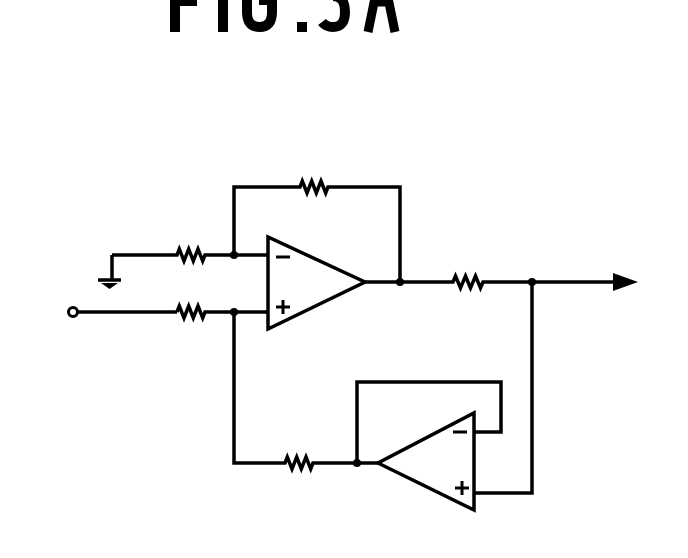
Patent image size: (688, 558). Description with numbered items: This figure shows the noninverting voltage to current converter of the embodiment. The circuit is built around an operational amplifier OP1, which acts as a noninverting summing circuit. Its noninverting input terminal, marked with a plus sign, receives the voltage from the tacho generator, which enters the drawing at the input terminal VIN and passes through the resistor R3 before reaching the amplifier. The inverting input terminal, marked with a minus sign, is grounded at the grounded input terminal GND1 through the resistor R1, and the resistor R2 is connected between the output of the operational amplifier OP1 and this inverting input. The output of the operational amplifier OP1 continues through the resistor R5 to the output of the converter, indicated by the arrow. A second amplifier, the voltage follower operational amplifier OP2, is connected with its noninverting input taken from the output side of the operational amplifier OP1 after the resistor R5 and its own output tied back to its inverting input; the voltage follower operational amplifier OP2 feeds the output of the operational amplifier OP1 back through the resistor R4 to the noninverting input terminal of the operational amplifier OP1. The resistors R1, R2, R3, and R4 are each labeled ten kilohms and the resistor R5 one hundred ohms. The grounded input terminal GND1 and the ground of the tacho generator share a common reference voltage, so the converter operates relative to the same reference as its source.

The resistor R1 is at (190, 222).
The resistor R2 is at (317, 213).
The resistor R3 is at (217, 311).
The resistor R4 is at (306, 410).
The resistor R5 is at (501, 280).
The operational amplifier OP1 is at (316, 283).
The voltage follower operational amplifier OP2 is at (426, 461).
The grounded input terminal GND1 is at (78, 274).
The input voltage terminal VIN is at (113, 331).